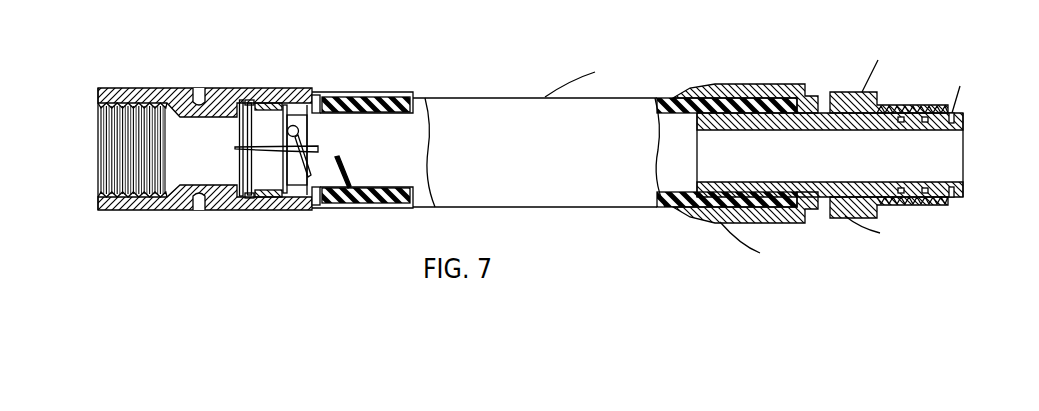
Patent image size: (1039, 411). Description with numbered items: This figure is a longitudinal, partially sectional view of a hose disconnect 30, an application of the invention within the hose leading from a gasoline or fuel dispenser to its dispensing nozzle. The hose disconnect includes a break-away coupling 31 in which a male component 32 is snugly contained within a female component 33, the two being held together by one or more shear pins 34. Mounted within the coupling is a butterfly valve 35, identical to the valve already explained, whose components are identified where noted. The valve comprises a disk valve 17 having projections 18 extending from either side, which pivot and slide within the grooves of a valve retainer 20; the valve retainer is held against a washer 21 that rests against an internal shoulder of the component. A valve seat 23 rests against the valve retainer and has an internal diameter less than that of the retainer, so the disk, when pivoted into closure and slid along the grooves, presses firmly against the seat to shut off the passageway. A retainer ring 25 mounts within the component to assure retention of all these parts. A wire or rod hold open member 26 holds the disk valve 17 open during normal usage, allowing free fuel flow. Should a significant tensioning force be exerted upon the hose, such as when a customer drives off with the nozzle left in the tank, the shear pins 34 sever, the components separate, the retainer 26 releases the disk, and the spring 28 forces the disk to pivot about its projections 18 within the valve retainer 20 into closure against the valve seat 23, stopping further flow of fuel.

The disk valve 17 is at (322, 205).
The projections 18 is at (292, 178).
The valve retainer 20 is at (292, 125).
The washer 21 is at (285, 163).
The valve seat 23 is at (262, 196).
The retainer ring 25 is at (244, 102).
The hold open member 26 is at (236, 140).
The spring 28 is at (301, 103).
The hose disconnect 30 is at (437, 88).
The break-away coupling 31 is at (148, 80).
The male component 32 is at (137, 95).
The female component 33 is at (243, 205).
The shear pins 34 is at (198, 90).
The butterfly valve 35 is at (362, 210).